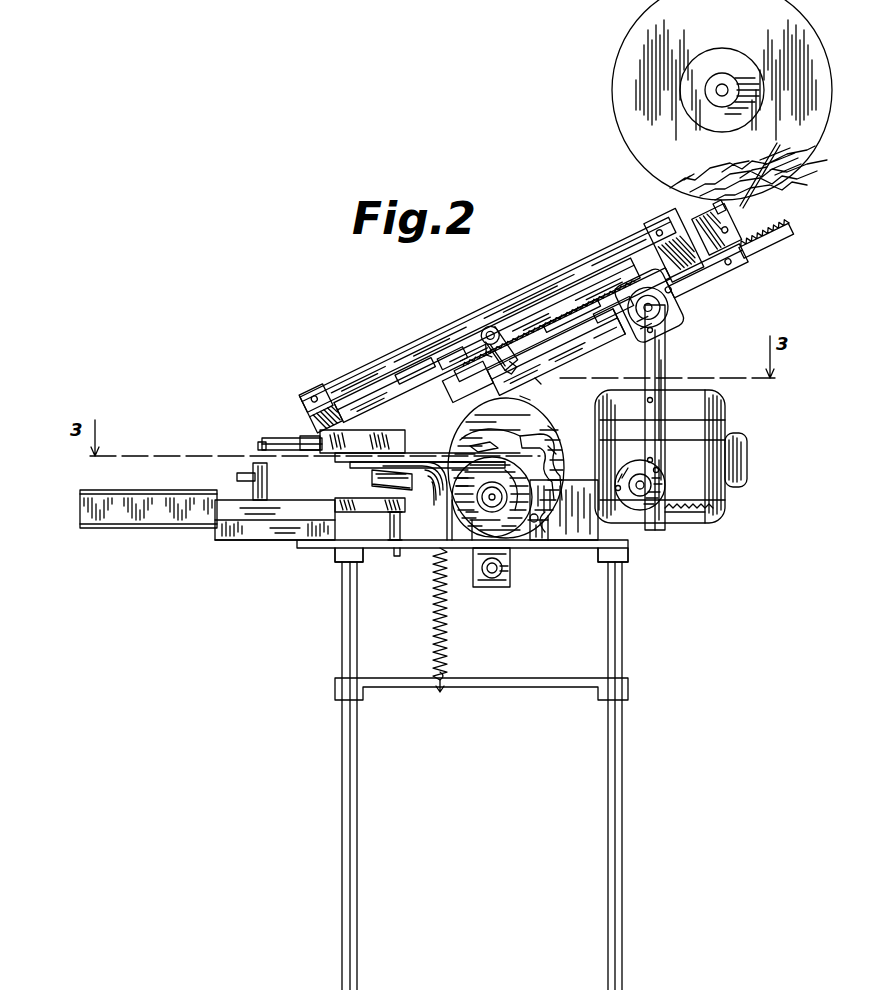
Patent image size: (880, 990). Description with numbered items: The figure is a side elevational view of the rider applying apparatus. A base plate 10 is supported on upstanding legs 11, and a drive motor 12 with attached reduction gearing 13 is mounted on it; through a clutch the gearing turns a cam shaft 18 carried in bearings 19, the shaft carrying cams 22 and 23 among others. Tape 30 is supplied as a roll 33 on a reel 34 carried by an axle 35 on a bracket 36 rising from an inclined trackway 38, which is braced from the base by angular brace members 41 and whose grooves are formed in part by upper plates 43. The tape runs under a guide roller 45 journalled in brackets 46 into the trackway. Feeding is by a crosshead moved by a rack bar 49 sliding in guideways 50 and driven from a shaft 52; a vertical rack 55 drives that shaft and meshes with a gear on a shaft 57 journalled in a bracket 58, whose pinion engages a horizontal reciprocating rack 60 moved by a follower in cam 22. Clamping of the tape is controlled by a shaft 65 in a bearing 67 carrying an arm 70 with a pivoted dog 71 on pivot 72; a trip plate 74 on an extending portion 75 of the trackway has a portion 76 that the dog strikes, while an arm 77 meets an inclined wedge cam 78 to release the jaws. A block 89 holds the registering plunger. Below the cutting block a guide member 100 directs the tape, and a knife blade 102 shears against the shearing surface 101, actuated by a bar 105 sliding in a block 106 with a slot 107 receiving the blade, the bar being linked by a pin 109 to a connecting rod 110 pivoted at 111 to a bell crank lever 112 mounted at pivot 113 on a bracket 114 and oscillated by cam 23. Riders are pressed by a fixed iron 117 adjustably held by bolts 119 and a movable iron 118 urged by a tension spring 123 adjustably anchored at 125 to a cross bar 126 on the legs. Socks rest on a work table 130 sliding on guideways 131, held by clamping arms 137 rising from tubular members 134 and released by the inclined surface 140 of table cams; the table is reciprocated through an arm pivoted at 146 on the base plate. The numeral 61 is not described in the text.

The base plate 10 is at (596, 554).
The legs 11 is at (340, 746).
The drive motor 12 is at (688, 394).
The reduction gearing 13 is at (580, 426).
The cam shaft 18 is at (492, 496).
The bearings 19 is at (492, 524).
The cam 22 is at (530, 396).
The cam 23 is at (508, 498).
The tape 30 is at (748, 207).
The roll 33 is at (728, 168).
The reel 34 is at (615, 128).
The axle 35 is at (727, 88).
The bracket 36 is at (712, 208).
The inclined trackway 38 is at (554, 308).
The brace members 41 is at (540, 380).
The upper plates 43 is at (640, 298).
The guide roller 45 is at (725, 281).
The brackets 46 is at (702, 237).
The rack bar 49 is at (772, 243).
The guideways 50 is at (568, 292).
The shaft 52 is at (660, 306).
The rack 55 is at (658, 238).
The shaft 57 is at (636, 480).
The bracket 58 is at (662, 480).
The reciprocating rack 60 is at (692, 512).
The post 61 is at (422, 526).
The shaft 65 is at (471, 320).
The bearing 67 is at (457, 336).
The arm 70 is at (505, 332).
The dog 71 is at (519, 355).
The pivot 72 is at (469, 384).
The trip plate 74 is at (561, 364).
The extending portion 75 is at (627, 323).
The portion 76 is at (637, 329).
The arm 77 is at (476, 290).
The cam 78 is at (438, 356).
The block 89 is at (489, 344).
The guide member 100 is at (324, 462).
The shearing surface 101 is at (260, 452).
The knife blade 102 is at (274, 440).
The bar 105 is at (444, 436).
The block 106 is at (338, 399).
The slot 107 is at (304, 440).
The pin 109 is at (482, 446).
The connecting rod 110 is at (506, 434).
The pivot 111 is at (554, 432).
The bell crank lever 112 is at (555, 452).
The pivot 113 is at (552, 504).
The bracket 114 is at (538, 542).
The heated iron 117 is at (380, 510).
The movable iron 118 is at (336, 474).
The bolts 119 is at (400, 556).
The tension spring 123 is at (433, 600).
The adjustable securing point 125 is at (434, 672).
The cross bar 126 is at (504, 680).
The work table 130 is at (166, 490).
The guideways 131 is at (256, 540).
The tubular members 134 is at (266, 474).
The clamping arms 137 is at (244, 472).
The inclined surface 140 is at (665, 342).
The pivot 146 is at (502, 568).